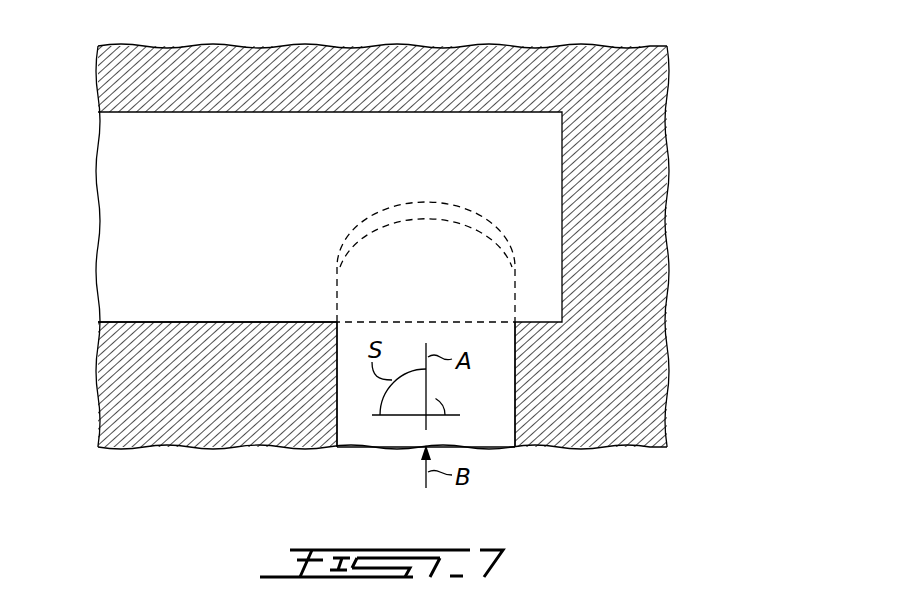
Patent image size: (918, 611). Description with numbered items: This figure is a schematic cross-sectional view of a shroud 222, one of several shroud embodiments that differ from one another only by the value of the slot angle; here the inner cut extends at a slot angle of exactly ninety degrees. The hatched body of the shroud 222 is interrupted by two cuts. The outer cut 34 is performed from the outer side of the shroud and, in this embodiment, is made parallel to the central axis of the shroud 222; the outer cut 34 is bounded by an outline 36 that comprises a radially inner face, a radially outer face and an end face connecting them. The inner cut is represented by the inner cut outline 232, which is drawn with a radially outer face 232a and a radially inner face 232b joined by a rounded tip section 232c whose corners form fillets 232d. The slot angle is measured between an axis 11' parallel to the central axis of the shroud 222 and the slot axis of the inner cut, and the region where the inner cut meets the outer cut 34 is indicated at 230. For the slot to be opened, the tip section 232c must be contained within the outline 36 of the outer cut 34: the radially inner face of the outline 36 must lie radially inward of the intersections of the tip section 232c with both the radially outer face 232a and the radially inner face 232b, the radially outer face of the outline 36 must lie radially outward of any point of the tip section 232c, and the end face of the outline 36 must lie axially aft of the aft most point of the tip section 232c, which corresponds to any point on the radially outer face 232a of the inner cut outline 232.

The shroud 222 is at (682, 102).
The outer cut 34 is at (123, 278).
The outline 36 is at (165, 325).
The inner cut outline 232 is at (516, 357).
The radially outer face 232a is at (517, 427).
The radially inner face 232b is at (335, 413).
The tip section 232c is at (505, 238).
The fillets 232d is at (486, 223).
The slot opening 230 is at (493, 430).
The axis 11' is at (470, 402).